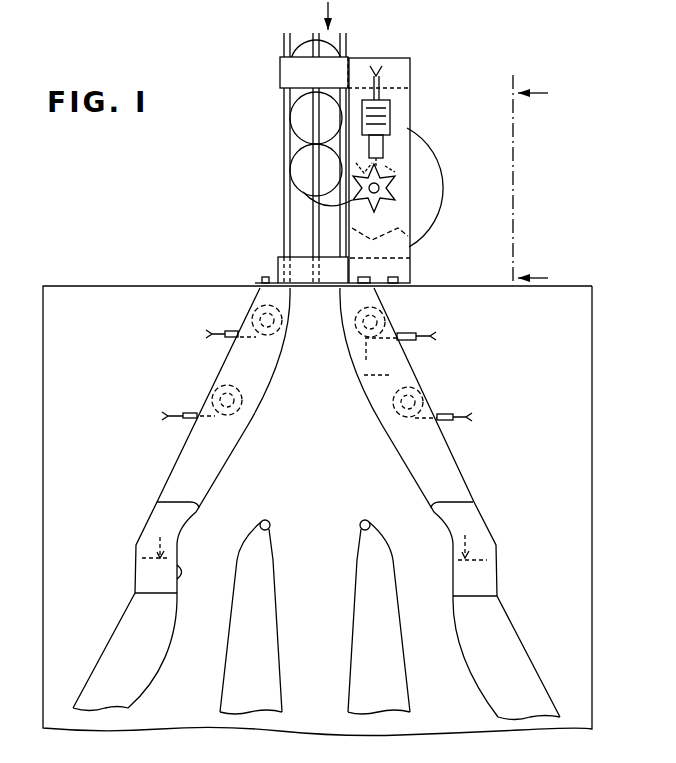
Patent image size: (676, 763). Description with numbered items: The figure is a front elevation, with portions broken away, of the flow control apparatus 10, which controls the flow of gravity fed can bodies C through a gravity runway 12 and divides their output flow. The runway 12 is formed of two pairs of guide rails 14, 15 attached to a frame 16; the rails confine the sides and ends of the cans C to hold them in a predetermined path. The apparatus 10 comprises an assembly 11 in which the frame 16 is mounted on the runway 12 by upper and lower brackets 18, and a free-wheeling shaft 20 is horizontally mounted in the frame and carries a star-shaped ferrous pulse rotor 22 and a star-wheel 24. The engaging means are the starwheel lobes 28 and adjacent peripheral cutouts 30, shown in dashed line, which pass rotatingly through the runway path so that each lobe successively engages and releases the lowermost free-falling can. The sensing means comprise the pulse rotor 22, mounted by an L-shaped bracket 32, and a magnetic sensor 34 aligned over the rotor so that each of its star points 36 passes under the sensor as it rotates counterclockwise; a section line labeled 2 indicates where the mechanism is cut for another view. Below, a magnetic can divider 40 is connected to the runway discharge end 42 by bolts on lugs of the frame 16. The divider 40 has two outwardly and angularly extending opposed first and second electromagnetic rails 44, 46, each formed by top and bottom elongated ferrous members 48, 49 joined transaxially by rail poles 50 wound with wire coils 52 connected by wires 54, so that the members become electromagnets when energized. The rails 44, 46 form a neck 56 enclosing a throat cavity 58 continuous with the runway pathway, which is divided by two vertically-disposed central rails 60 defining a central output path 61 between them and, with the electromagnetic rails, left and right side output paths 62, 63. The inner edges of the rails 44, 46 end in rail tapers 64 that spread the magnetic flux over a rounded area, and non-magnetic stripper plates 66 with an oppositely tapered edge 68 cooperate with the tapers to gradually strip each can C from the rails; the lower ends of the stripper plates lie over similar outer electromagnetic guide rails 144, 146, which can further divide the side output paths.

The section line 2- 2 is at (541, 181).
The flow control apparatus 10 is at (213, 218).
The assembly 11 is at (463, 108).
The gravity runway 12 is at (272, 152).
The guide rails 14 is at (285, 38).
The guide rails 15 is at (305, 108).
The frame 16 is at (400, 58).
The upper and lower brackets 18 is at (290, 75).
The free-wheeling shaft 20 is at (396, 200).
The star-shaped ferrous pulse rotor 22 is at (440, 168).
The star-wheel 24 is at (436, 244).
The starwheel lobes 28 is at (330, 200).
The peripheral cutouts 30 is at (380, 243).
The L-shaped bracket 32 is at (386, 103).
The magnetic sensor 34 is at (391, 147).
The star points 36 is at (400, 163).
The magnetic can divider 40 is at (169, 470).
The gravity runway discharge end 42 is at (301, 255).
The first electromagnetic rail 44 is at (302, 499).
The second electromagnetic rail 46 is at (454, 504).
The top elongated ferrous member 48 is at (215, 476).
The bottom elongated ferrous member 49 is at (459, 478).
The rail poles 50 is at (381, 311).
The wire coils 52 is at (257, 312).
The wires 54 is at (223, 334).
The neck 56 is at (233, 440).
The throat cavity 58 is at (330, 447).
The central rails 60 is at (262, 676).
The central output path 61 is at (328, 572).
The left side output path 62 is at (227, 587).
The right side output path 63 is at (433, 572).
The rail tapers 64 is at (314, 531).
The stripper plates 66 is at (156, 579).
The oppositely tapered edge 68 is at (183, 576).
The electromagnetic guide rail 144 is at (104, 663).
The electromagnetic guide rail 146 is at (507, 633).
The can bodies C is at (332, 40).